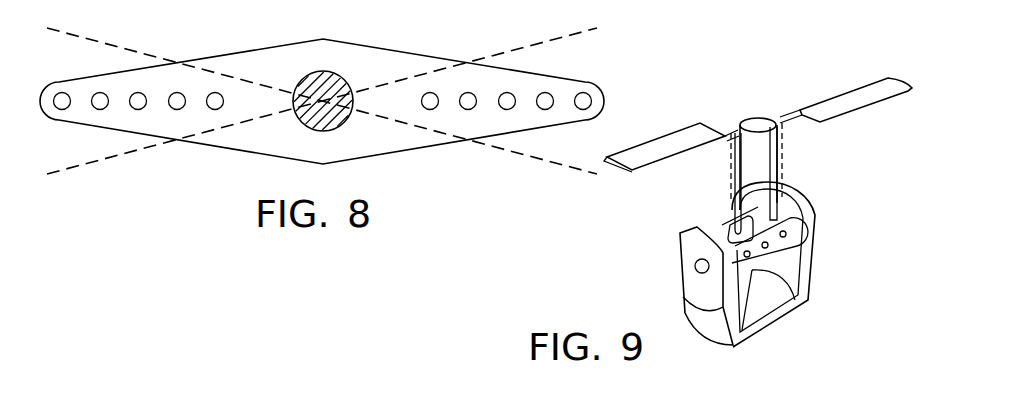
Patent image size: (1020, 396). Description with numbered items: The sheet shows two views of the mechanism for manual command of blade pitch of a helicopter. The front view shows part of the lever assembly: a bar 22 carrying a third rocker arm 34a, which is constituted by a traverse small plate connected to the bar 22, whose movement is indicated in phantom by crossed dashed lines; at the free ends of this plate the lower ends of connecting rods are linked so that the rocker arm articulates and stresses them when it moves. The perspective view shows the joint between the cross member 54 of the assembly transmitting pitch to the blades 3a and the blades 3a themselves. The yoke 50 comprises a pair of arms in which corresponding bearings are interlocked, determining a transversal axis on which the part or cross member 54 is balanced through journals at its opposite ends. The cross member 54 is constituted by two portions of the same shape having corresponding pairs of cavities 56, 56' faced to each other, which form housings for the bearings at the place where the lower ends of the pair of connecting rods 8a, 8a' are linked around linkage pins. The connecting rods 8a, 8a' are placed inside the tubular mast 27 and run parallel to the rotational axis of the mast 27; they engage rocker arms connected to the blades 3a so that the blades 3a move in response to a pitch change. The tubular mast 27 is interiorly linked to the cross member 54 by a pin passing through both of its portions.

In FIG. 8, the third rocker arm 34a is at (227, 73).
In FIG. 8, the bar 22 is at (340, 92).
In FIG. 9, the blades 3a is at (667, 143).
In FIG. 9, the connecting rod 8a is at (711, 183).
In FIG. 9, the connecting rod 8a' is at (806, 173).
In FIG. 9, the tubular mast 27 is at (733, 183).
In FIG. 9, the cross member 54 is at (807, 227).
In FIG. 9, the yoke 50 is at (705, 285).
In FIG. 9, the cavity 56 is at (768, 319).
In FIG. 9, the cavity 56' is at (813, 258).